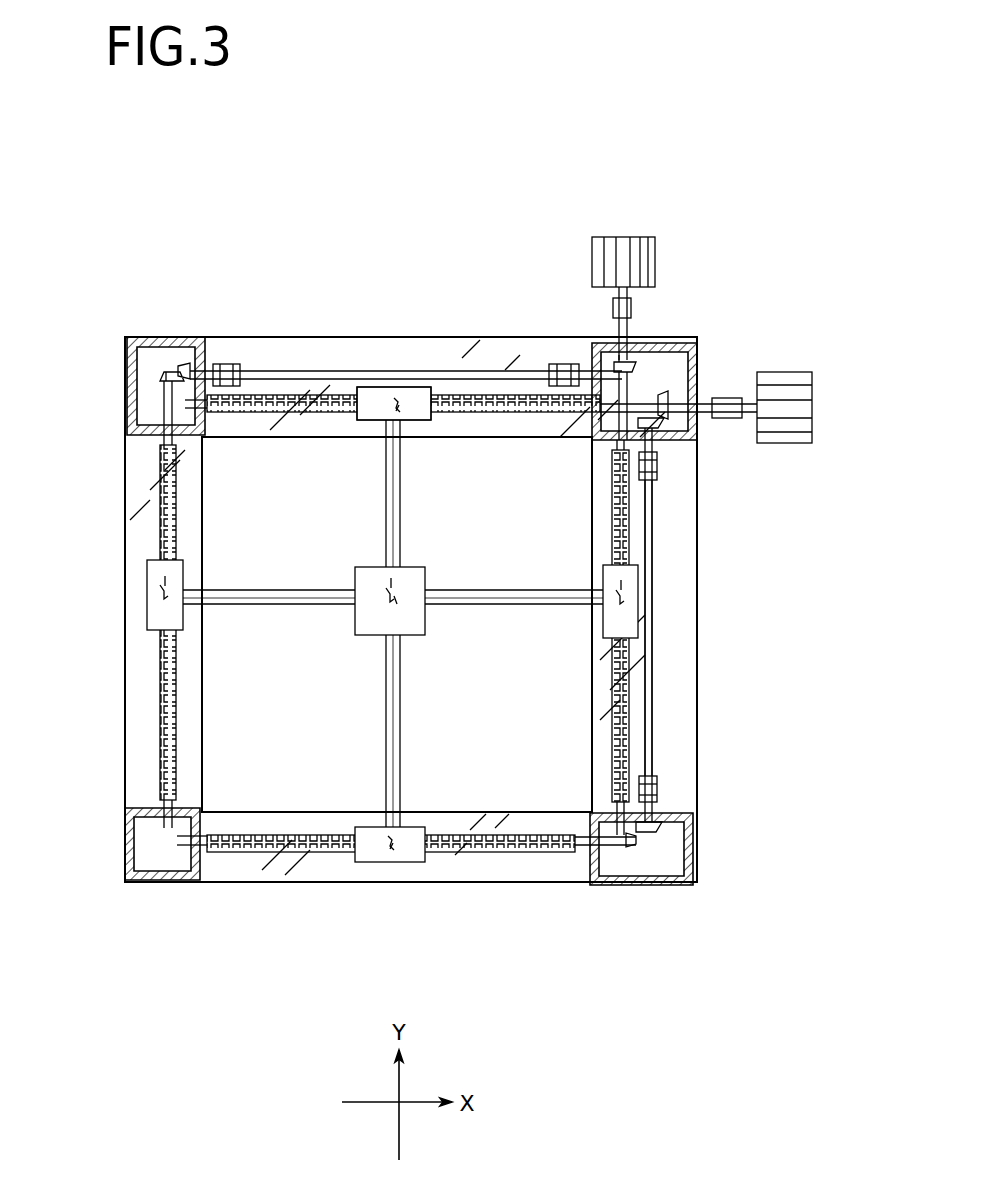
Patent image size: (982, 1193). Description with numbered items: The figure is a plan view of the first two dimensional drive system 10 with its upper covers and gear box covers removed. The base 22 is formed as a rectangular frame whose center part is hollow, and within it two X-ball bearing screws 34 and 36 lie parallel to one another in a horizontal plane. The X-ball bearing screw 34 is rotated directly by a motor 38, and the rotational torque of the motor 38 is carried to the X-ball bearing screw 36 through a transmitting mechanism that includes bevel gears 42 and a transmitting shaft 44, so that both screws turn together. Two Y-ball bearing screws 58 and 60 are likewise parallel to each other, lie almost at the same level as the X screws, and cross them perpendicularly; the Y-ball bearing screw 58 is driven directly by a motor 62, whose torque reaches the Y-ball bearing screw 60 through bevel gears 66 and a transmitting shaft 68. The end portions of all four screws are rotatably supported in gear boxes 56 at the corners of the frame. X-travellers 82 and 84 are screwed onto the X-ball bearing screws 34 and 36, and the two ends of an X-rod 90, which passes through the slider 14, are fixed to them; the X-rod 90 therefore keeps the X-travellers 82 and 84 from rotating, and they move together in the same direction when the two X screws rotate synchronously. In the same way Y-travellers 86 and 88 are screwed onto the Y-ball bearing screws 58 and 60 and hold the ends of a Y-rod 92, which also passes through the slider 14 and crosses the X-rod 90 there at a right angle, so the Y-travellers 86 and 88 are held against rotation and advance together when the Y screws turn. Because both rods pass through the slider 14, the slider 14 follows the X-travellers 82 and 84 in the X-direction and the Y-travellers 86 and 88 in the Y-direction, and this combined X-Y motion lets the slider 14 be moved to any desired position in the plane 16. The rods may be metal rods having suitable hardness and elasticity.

The first two dimensional drive system 10 is at (778, 176).
The slider 14 is at (378, 636).
The plane 16 is at (306, 508).
The base 22 is at (262, 886).
The X-ball bearing screw 34 is at (306, 396).
The X-ball bearing screw 36 is at (522, 856).
The motor 38 is at (812, 406).
The bevel gears 42 is at (668, 404).
The transmitting shaft 44 is at (654, 705).
The gear boxes 56 is at (665, 360).
The Y-ball bearing screw 58 is at (632, 538).
The Y-ball bearing screw 60 is at (158, 722).
The motor 62 is at (630, 238).
The bevel gears 66 is at (176, 366).
The transmitting shaft 68 is at (405, 388).
The X-traveller 82 is at (428, 422).
The X-traveller 84 is at (398, 866).
The Y-traveller 86 is at (640, 616).
The Y-traveller 88 is at (148, 610).
The X-rod 90 is at (402, 766).
The Y-rod 92 is at (284, 606).